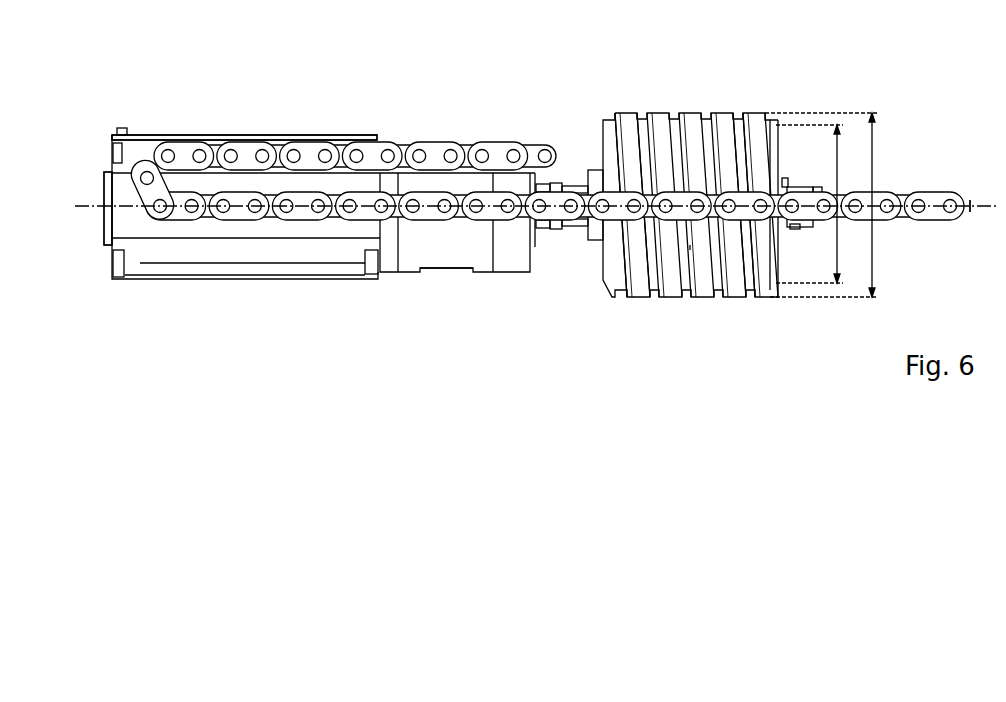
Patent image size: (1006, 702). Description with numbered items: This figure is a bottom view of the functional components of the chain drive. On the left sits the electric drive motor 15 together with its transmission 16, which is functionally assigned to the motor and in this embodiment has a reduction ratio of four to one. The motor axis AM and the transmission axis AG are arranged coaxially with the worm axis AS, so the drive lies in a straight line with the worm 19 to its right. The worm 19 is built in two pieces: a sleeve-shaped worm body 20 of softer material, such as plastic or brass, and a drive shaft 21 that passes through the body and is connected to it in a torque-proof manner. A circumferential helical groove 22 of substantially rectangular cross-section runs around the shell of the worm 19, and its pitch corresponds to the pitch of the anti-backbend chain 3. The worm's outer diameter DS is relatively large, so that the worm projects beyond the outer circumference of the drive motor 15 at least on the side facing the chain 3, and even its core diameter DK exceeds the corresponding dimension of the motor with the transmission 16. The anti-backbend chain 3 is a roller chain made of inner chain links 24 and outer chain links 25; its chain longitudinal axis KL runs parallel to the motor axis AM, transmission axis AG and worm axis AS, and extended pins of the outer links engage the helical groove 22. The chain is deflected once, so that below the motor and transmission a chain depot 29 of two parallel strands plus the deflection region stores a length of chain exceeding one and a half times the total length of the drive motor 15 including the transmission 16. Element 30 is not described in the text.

The anti-backbend chain 3 is at (435, 136).
The electric drive motor 15 is at (140, 133).
The transmission 16 is at (418, 245).
The worm 19 is at (690, 162).
The worm body 20 is at (660, 128).
The drive shaft 21 is at (580, 170).
The helical groove 22 is at (740, 128).
The inner chain links 24 is at (938, 221).
The outer chain links 25 is at (904, 200).
The chain depot 29 is at (342, 128).
The drive chain 30 is at (556, 196).
The core diameter DK is at (840, 238).
The diameter of the worm DS is at (872, 272).
The chain longitudinal axis KL is at (968, 210).
The transmission axis AG is at (465, 228).
The worm axis AS is at (690, 250).
The motor axis AM is at (98, 205).